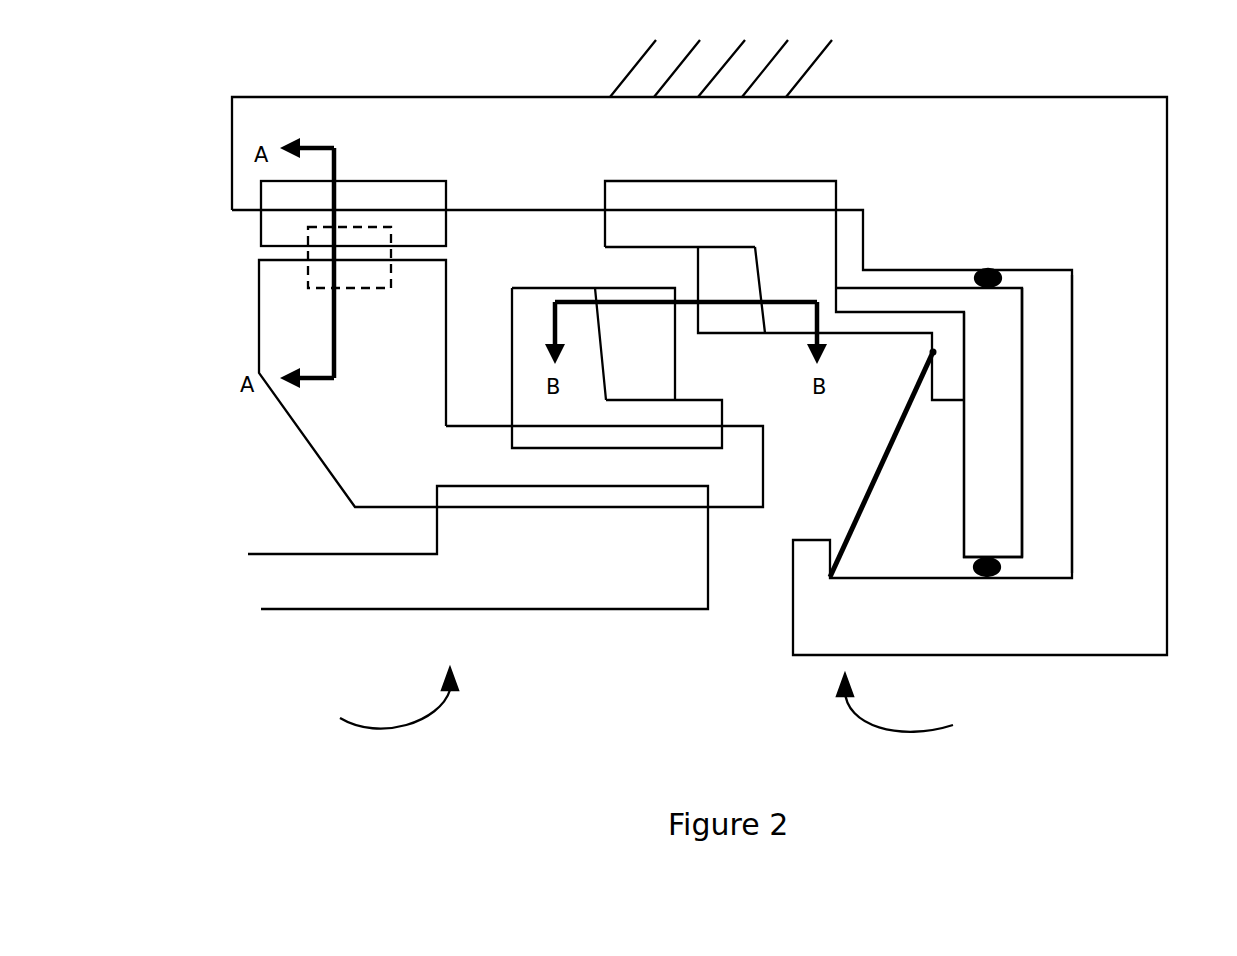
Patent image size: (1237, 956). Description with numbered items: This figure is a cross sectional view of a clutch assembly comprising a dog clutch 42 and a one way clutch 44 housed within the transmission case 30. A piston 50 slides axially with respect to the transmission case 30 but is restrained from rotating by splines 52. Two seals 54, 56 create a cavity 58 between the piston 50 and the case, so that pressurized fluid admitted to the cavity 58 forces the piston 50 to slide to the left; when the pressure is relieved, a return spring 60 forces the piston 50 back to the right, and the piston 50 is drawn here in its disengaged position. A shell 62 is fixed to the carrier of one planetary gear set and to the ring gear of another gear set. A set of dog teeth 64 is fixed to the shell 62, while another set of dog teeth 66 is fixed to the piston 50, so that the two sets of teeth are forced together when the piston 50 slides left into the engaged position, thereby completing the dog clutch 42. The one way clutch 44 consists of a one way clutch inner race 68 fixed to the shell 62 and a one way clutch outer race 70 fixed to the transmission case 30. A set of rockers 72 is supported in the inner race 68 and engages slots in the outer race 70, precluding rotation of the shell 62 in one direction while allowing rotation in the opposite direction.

The transmission case 30 is at (1167, 178).
The dog clutch 42 is at (919, 704).
The one way clutch 44 is at (376, 699).
The piston 50 is at (965, 477).
The splines 52 is at (755, 181).
The seal 54 is at (1003, 278).
The seal 56 is at (1002, 572).
The cavity 58 is at (1047, 424).
The return spring 60 is at (892, 408).
The shell 62 is at (522, 609).
The set of dog teeth 64 is at (625, 290).
The set of dog teeth 66 is at (716, 333).
The one way clutch inner race 68 is at (288, 418).
The one way clutch outer race 70 is at (255, 227).
The set of rockers 72 is at (355, 290).